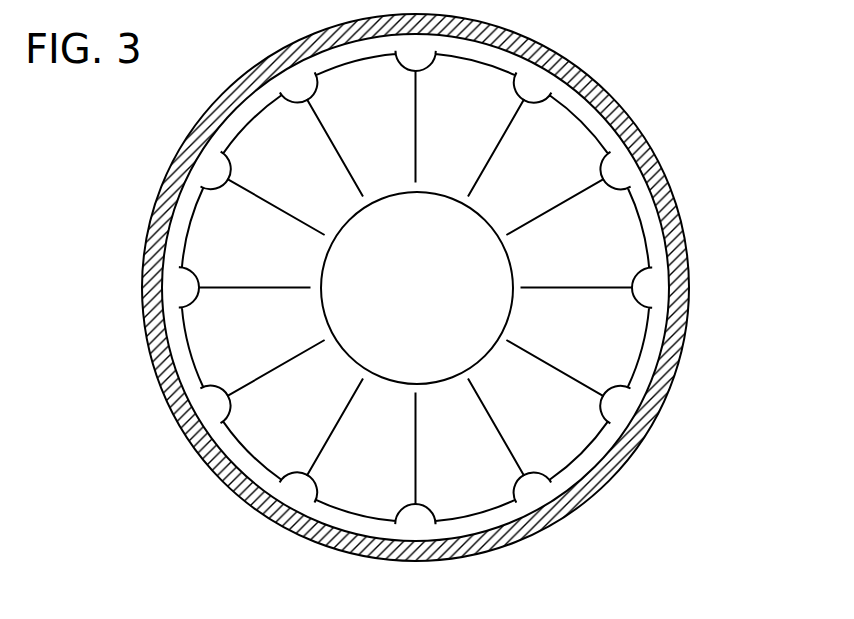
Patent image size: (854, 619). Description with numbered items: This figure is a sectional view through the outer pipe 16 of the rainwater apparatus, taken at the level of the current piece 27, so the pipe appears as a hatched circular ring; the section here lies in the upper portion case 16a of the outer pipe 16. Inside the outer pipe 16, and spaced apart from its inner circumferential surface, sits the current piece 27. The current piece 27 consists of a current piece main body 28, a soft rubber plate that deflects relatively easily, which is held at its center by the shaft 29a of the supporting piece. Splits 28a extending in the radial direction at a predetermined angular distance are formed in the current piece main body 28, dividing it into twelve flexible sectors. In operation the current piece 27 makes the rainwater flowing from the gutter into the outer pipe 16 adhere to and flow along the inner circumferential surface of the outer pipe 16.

The outer pipe 16 is at (463, 287).
The upper portion case 16a is at (678, 352).
The current piece 27 is at (344, 287).
The current piece main body 28 is at (360, 287).
The splits 28a is at (265, 192).
The shaft 29a is at (443, 305).